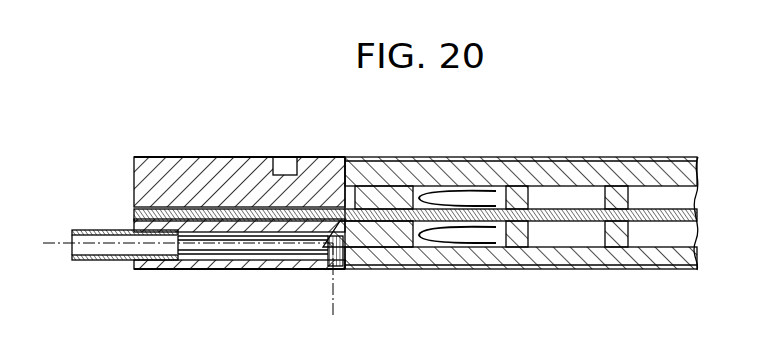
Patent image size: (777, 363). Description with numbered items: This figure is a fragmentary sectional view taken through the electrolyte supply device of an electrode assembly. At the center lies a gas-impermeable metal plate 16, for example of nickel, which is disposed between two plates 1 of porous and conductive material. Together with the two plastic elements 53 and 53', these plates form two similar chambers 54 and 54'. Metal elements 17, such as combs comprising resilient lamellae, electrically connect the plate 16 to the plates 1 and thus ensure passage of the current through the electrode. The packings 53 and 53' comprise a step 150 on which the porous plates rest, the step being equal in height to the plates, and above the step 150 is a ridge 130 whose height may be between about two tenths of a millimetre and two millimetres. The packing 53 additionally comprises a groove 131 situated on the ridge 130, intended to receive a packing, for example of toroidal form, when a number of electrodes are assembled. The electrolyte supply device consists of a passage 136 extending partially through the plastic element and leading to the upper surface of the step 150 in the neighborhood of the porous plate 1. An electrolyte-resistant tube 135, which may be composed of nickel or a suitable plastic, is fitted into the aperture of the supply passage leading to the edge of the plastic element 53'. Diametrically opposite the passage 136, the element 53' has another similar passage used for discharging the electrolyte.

The porous conductive plate 1 is at (632, 174).
The gas-impermeable metal plate 16 is at (208, 182).
The metal elements 17 is at (484, 172).
The plastic element 53 is at (231, 168).
The plastic element 53' is at (239, 290).
The chamber 54 is at (523, 156).
The chamber 54' is at (523, 270).
The ridge 130 is at (312, 158).
The groove 131 is at (281, 170).
The electrolyte-resistant tube 135 is at (93, 230).
The electrolyte supply passage 136 is at (266, 262).
The step 150 is at (370, 258).